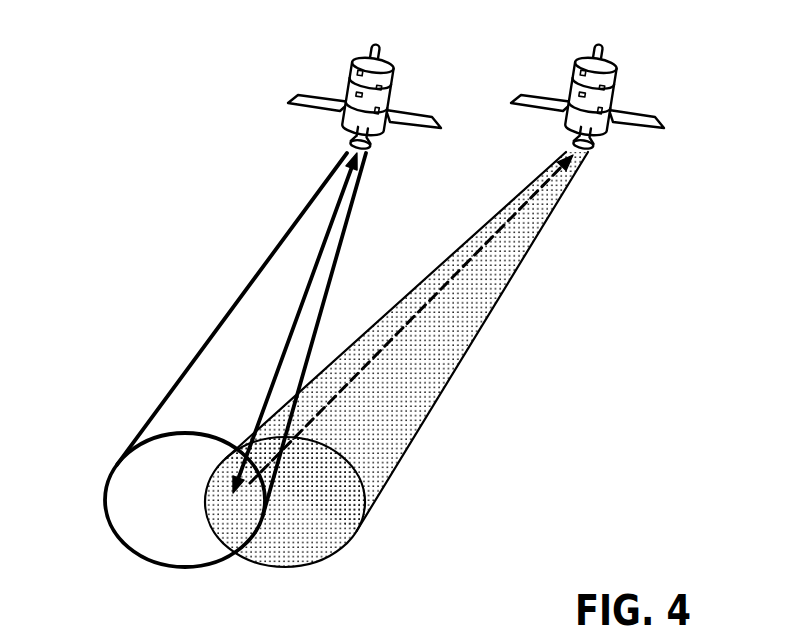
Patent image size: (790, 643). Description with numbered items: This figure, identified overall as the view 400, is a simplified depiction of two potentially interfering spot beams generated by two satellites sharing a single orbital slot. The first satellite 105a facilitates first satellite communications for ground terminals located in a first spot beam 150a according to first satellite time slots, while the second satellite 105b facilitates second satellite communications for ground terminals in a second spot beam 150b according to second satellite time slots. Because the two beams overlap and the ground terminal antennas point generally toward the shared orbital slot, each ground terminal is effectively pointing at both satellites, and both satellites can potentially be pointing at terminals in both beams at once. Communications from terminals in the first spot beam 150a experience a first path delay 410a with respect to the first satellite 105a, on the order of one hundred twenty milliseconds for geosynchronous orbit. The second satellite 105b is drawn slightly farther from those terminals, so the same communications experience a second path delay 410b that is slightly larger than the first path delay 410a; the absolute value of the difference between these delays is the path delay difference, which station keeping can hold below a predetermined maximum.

The satellite communication system with path delays 400 is at (177, 49).
The first satellite 105a is at (385, 131).
The second satellite 105b is at (608, 131).
The first spot beam 150a is at (122, 535).
The second spot beam 150b is at (440, 578).
The first path delay 410a is at (302, 308).
The second path delay 410b is at (490, 243).